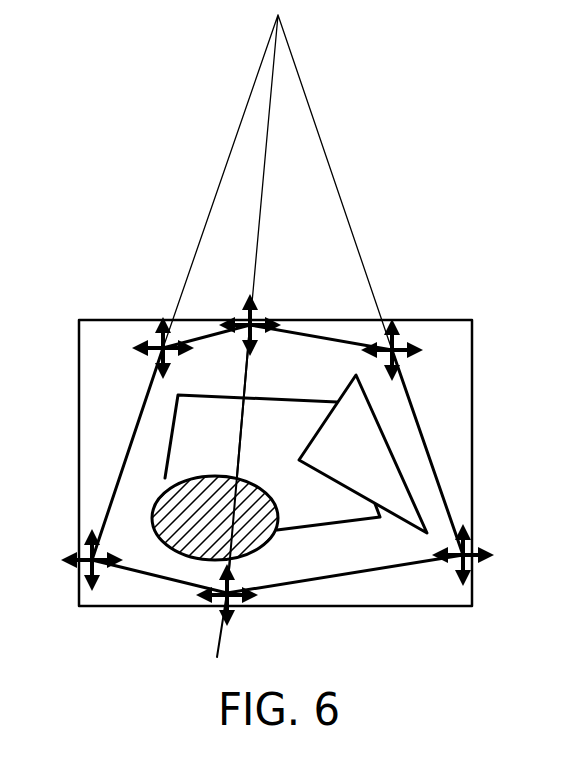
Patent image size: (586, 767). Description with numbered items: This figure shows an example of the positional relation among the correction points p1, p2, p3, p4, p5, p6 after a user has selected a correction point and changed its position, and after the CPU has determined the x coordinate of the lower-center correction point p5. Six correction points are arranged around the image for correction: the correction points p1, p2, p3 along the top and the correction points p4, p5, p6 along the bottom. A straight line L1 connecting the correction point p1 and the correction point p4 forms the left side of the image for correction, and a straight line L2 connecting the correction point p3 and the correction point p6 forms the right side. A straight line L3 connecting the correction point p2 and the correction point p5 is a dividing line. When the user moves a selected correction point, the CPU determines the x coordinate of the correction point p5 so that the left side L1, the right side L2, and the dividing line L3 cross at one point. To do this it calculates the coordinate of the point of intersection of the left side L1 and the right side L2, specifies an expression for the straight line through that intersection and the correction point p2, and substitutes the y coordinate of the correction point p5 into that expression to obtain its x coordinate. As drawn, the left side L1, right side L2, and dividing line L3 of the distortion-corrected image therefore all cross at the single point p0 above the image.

The point of intersection p0 is at (278, 15).
The correction point p1 is at (158, 347).
The correction point p2 is at (255, 318).
The correction point p3 is at (398, 343).
The correction point p4 is at (87, 558).
The correction point p5 is at (232, 593).
The correction point p6 is at (470, 553).
The left side L1 is at (133, 435).
The right side L2 is at (423, 440).
The dividing line L3 is at (243, 427).